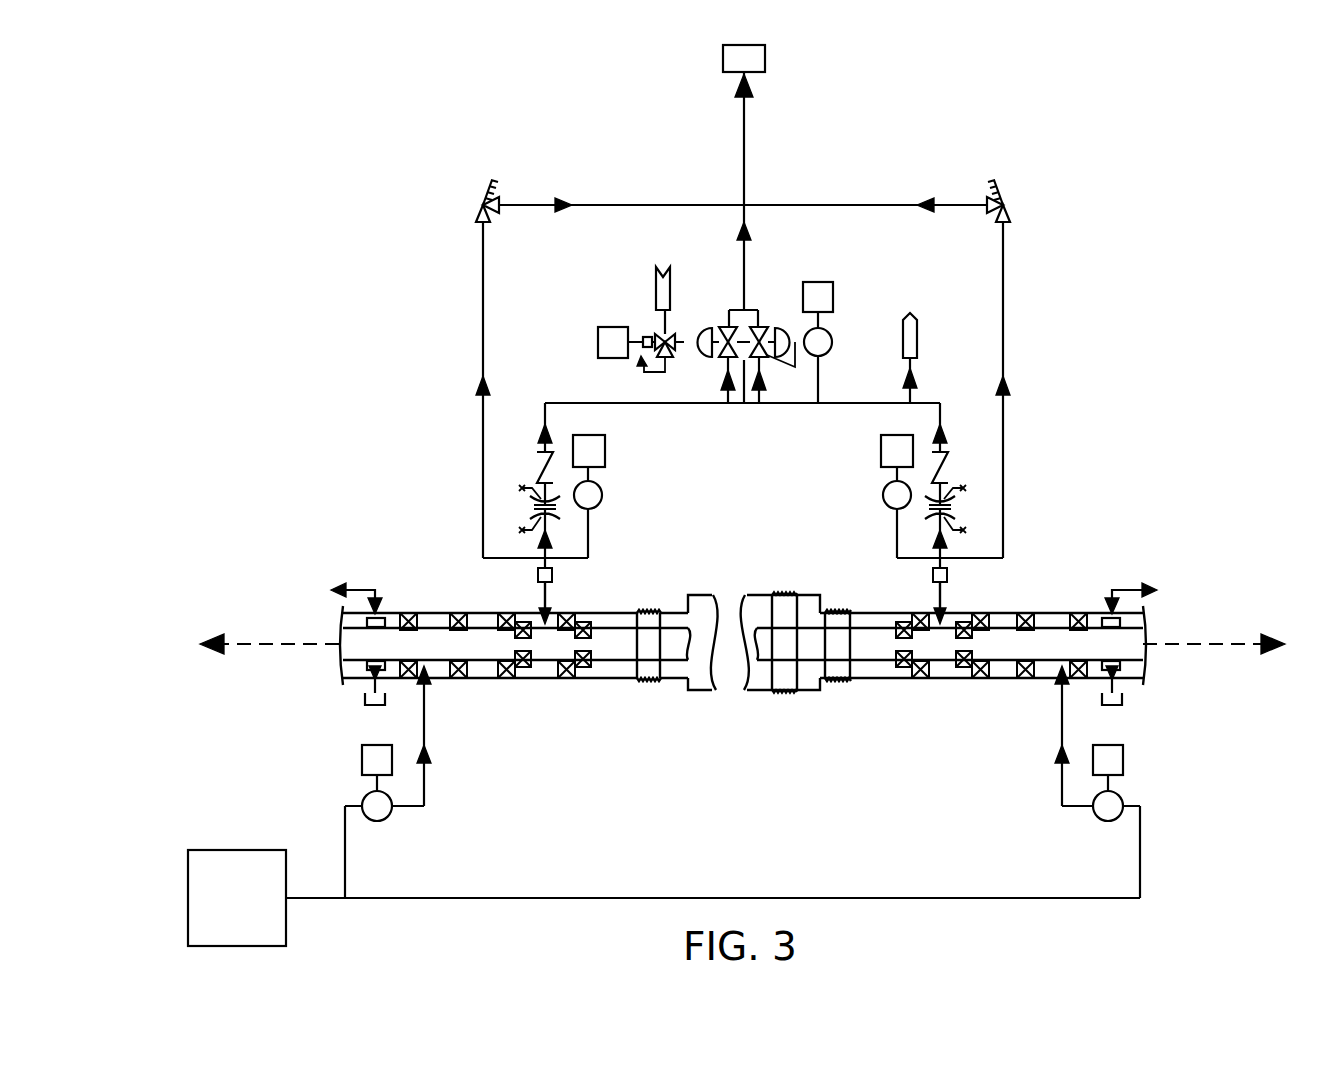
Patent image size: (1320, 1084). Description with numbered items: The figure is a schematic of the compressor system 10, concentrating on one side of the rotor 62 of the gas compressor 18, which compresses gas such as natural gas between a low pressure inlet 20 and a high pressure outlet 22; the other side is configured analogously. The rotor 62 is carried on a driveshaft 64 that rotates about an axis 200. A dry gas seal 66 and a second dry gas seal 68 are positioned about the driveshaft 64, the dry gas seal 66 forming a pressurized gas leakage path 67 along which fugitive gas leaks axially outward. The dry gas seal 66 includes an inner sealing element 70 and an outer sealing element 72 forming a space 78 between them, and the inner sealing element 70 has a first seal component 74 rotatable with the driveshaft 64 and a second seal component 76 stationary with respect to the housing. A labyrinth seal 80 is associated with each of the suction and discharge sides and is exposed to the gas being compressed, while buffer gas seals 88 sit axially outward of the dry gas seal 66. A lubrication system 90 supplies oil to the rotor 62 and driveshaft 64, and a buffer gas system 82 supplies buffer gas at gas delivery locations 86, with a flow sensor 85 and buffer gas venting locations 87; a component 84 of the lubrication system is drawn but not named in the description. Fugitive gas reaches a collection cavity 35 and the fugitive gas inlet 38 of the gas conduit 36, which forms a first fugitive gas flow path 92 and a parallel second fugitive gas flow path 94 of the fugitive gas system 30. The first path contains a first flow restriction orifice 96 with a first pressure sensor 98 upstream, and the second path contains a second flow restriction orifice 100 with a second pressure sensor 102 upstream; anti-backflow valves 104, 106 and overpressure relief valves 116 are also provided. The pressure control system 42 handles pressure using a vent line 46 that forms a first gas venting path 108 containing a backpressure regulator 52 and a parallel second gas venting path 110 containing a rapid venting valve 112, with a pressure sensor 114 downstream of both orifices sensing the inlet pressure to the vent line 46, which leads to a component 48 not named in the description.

The compressor system 10 is at (212, 390).
The gas compressor 18 is at (265, 626).
The low pressure inlet 20 is at (678, 695).
The high pressure outlet 22 is at (818, 692).
The fugitive gas system 30 is at (1068, 378).
The collection cavity 35 is at (527, 594).
The gas conduit 36 is at (924, 373).
The fugitive gas inlet 38 is at (537, 574).
The pressure control system 42 is at (365, 232).
The vent line 46 is at (765, 195).
The flare 48 is at (766, 55).
The backpressure regulator 52 is at (781, 326).
The rotor 62 is at (703, 720).
The driveshaft 64 is at (345, 656).
The dry gas seal 66 is at (536, 698).
The pressurized gas leakage path 67 is at (580, 652).
The second dry gas seal 68 is at (923, 705).
The inner sealing element 70 is at (594, 698).
The outer sealing element 72 is at (498, 703).
The first seal component 74 is at (588, 614).
The second seal component 76 is at (562, 610).
The space 78 is at (552, 668).
The labyrinth seal 80 is at (650, 610).
The buffer gas system 82 is at (150, 862).
The oil reservoir 84 is at (212, 850).
The flow sensor 85 is at (380, 836).
The gas delivery locations 86 is at (428, 700).
The buffer gas venting locations 87 is at (487, 620).
The buffer gas seals 88 is at (450, 602).
The lubrication system 90 is at (335, 581).
The first fugitive gas flow path 92 is at (528, 552).
The second fugitive gas flow path 94 is at (958, 552).
The first flow restriction orifice 96 is at (569, 522).
The first pressure sensor 98 is at (602, 495).
The second flow restriction orifice 100 is at (980, 503).
The second pressure sensor 102 is at (883, 495).
The anti-backflow valve 104 is at (960, 460).
The anti-backflow valve 106 is at (522, 462).
The first gas venting path 108 is at (761, 376).
The second gas venting path 110 is at (726, 376).
The rapid venting valve 112 is at (702, 330).
The pressure sensor 114 is at (832, 342).
The overpressure relief valves 116 is at (466, 191).
The axis 200 is at (1224, 641).